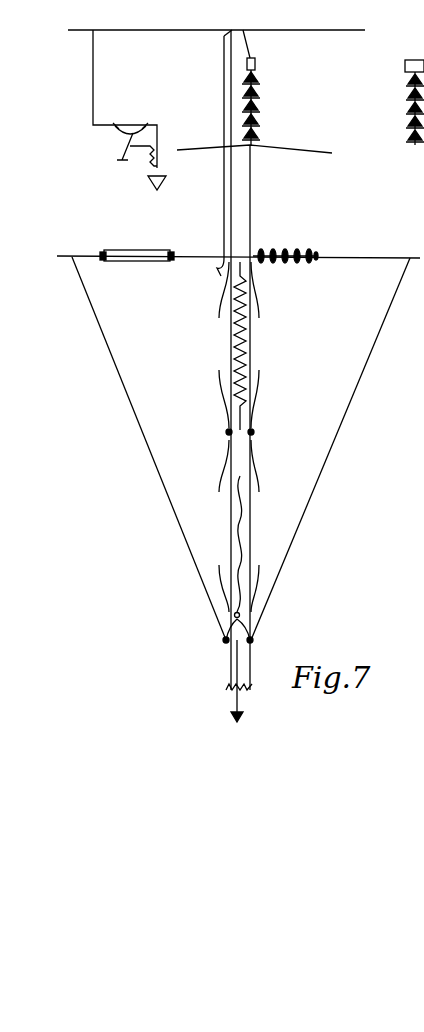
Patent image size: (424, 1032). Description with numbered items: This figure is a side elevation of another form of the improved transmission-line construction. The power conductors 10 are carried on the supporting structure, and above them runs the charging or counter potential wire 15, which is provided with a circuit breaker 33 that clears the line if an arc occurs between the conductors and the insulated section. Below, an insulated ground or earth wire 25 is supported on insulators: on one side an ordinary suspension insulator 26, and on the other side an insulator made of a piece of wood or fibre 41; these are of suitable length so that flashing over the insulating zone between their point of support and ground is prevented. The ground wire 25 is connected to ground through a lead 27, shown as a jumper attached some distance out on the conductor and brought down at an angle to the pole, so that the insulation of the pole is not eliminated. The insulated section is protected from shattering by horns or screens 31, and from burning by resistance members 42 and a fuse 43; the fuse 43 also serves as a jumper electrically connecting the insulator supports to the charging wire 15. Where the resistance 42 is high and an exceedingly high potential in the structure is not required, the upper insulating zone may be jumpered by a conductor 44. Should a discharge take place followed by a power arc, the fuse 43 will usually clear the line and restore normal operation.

The charging or counter potential wire 15 is at (93, 31).
The power conductor 10 is at (289, 149).
The conductor 44 is at (222, 100).
The fuse 43 is at (251, 46).
The resistance member 42 is at (258, 66).
The circuit breaker 33 is at (126, 110).
The insulated ground wire 25 is at (72, 256).
The piece of wood or fibre 41 is at (136, 253).
The suspension insulator 26 is at (285, 243).
The horns or screens 31 is at (262, 307).
The lead 27 is at (163, 484).